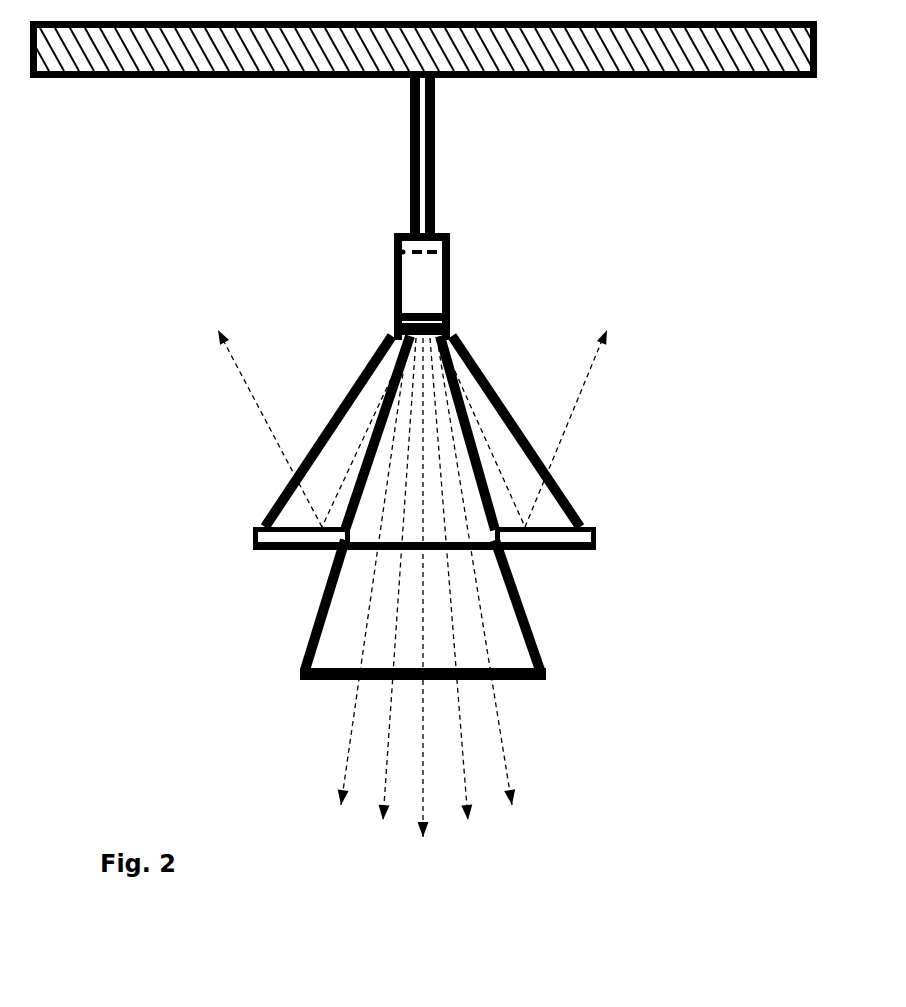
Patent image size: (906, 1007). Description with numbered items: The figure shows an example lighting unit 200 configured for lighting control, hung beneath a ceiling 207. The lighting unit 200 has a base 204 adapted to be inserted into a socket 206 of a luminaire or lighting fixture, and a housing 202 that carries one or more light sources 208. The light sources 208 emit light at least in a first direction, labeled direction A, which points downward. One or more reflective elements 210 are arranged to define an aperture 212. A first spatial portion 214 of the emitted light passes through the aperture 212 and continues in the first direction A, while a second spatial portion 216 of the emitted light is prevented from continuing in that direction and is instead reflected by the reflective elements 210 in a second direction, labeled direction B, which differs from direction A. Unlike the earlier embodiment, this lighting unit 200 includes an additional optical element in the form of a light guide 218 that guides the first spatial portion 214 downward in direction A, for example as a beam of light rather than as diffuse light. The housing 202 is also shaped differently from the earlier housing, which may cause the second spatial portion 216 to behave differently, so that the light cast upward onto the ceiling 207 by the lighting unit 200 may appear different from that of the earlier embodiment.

The lighting unit 200 is at (103, 333).
The housing 202 is at (330, 432).
The base 204 is at (431, 270).
The socket 206 is at (394, 283).
The ceiling 207 is at (542, 80).
The light sources 208 is at (433, 312).
The reflective elements 210 is at (303, 525).
The aperture 212 is at (352, 560).
The first spatial portion 214 is at (522, 642).
The second spatial portion 216 is at (300, 348).
The light guide 218 is at (312, 622).